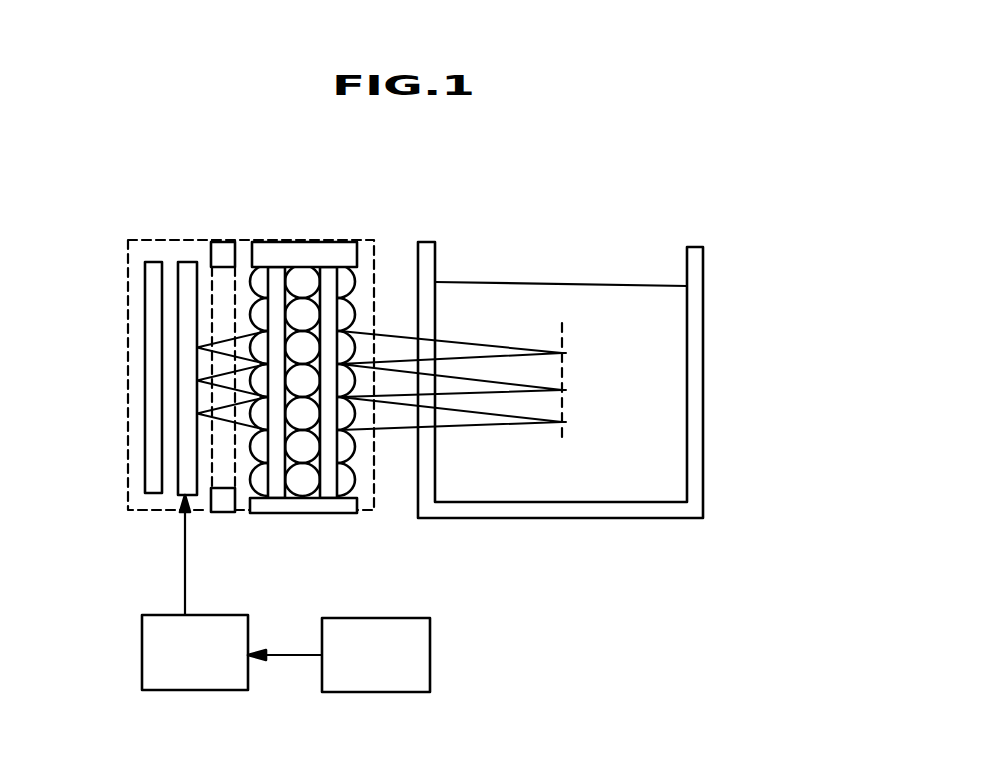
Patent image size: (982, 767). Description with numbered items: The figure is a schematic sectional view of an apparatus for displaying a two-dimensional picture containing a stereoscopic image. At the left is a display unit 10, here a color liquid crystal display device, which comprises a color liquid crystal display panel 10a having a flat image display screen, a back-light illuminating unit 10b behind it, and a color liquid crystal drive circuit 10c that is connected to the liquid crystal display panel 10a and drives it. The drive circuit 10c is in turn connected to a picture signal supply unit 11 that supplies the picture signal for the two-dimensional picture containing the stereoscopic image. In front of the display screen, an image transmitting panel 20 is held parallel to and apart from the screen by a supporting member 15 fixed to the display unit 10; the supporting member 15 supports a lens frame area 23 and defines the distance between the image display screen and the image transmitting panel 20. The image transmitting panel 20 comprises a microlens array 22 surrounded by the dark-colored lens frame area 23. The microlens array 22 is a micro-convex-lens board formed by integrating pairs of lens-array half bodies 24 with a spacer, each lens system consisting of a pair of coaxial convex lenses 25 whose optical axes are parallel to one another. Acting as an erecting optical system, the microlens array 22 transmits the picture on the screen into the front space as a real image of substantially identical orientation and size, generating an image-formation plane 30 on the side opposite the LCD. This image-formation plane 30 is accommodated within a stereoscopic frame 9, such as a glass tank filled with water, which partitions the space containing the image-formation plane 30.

The stereoscopic frame 9 is at (555, 515).
The display unit 10 is at (127, 270).
The color liquid crystal display panel 10a is at (190, 266).
The back-light illuminating unit 10b is at (148, 338).
The color liquid crystal drive circuit 10c is at (170, 690).
The picture signal supply unit 11 is at (352, 692).
The supporting member 15 is at (223, 255).
The image transmitting panel 20 is at (367, 515).
The microlens array 22 is at (341, 358).
The lens frame area 23 is at (262, 258).
The lens-array half body 24 is at (328, 267).
The convex lens 25 is at (352, 305).
The image-formation plane 30 is at (565, 330).